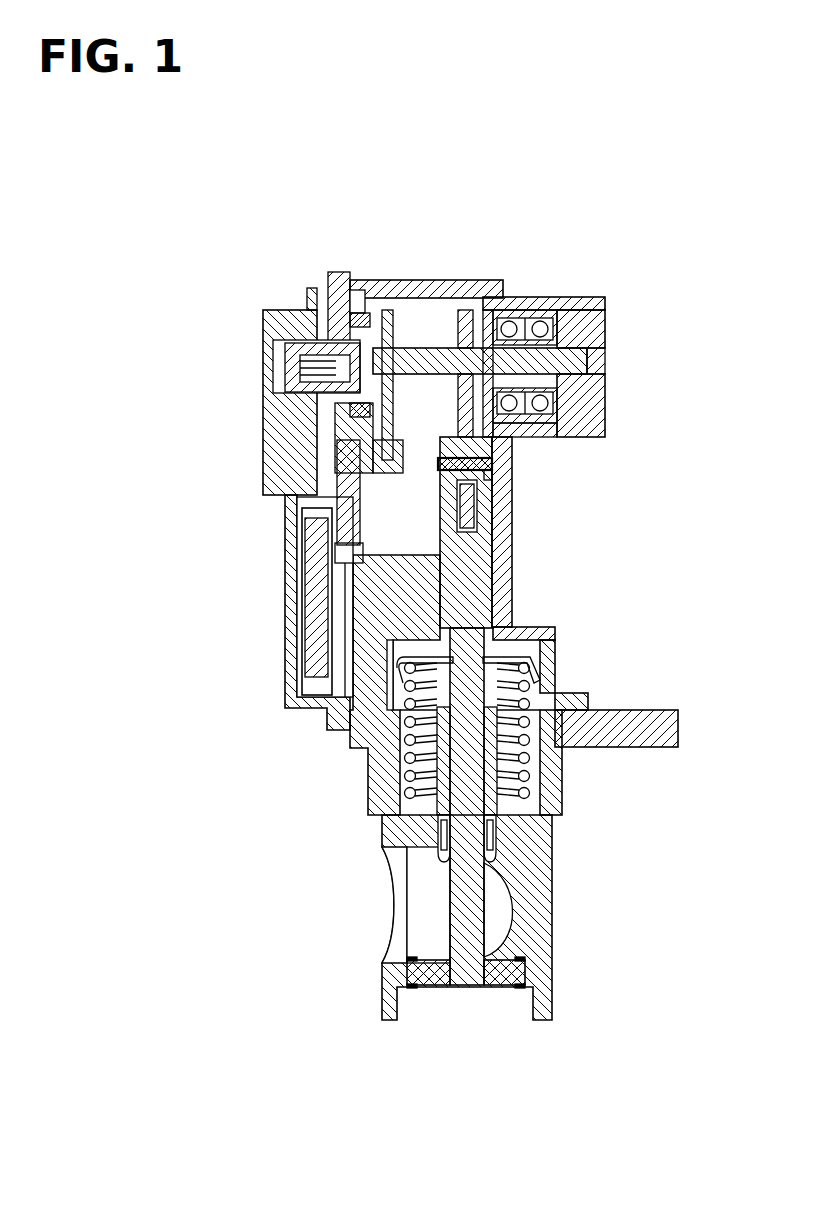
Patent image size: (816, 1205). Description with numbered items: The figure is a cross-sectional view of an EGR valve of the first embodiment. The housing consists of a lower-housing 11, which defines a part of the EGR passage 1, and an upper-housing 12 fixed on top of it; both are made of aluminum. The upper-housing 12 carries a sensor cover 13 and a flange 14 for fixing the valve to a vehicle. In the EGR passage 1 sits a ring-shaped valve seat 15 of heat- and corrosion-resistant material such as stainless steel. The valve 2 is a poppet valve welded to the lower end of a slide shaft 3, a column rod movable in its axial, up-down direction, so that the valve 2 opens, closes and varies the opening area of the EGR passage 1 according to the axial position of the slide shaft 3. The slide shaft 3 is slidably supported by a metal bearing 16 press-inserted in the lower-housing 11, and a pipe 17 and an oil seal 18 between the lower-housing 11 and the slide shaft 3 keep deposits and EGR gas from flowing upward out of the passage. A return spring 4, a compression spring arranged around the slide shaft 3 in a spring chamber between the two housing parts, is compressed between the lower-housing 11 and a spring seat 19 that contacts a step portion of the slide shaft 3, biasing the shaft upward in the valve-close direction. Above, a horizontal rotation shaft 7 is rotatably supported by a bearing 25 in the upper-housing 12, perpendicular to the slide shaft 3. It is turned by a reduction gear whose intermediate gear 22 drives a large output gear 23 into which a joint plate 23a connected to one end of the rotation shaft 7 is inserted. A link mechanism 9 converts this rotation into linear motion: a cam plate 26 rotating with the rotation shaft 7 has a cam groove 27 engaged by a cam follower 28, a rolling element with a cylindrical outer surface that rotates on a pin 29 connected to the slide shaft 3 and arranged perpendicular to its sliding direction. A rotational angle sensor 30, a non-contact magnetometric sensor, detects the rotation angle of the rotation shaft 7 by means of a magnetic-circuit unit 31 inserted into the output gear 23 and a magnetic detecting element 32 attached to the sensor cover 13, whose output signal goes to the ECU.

The EGR passage 1 is at (418, 883).
The valve 2 is at (437, 978).
The slide shaft 3 is at (467, 908).
The return spring 4 is at (523, 760).
The rotation shaft 7 is at (573, 363).
The link mechanism 9 is at (452, 408).
The lower-housing 11 is at (530, 950).
The upper-housing 12 is at (510, 592).
The sensor cover 13 is at (292, 667).
The flange 14 is at (638, 712).
The valve seat 15 is at (517, 984).
The metal bearing 16 is at (437, 777).
The pipe 17 is at (490, 845).
The oil seal 18 is at (496, 822).
The spring seat 19 is at (537, 663).
The intermediate gear 22 is at (315, 597).
The output gear 23 is at (335, 540).
The joint plate 23a is at (337, 480).
The bearing 25 is at (505, 318).
The cam plate 26 is at (463, 318).
The cam groove 27 is at (490, 458).
The cam follower 28 is at (493, 507).
The pin 29 is at (493, 472).
The rotational angle sensor 30 is at (207, 393).
The magnetic-circuit unit 31 is at (352, 392).
The magnetic detecting element 32 is at (352, 422).